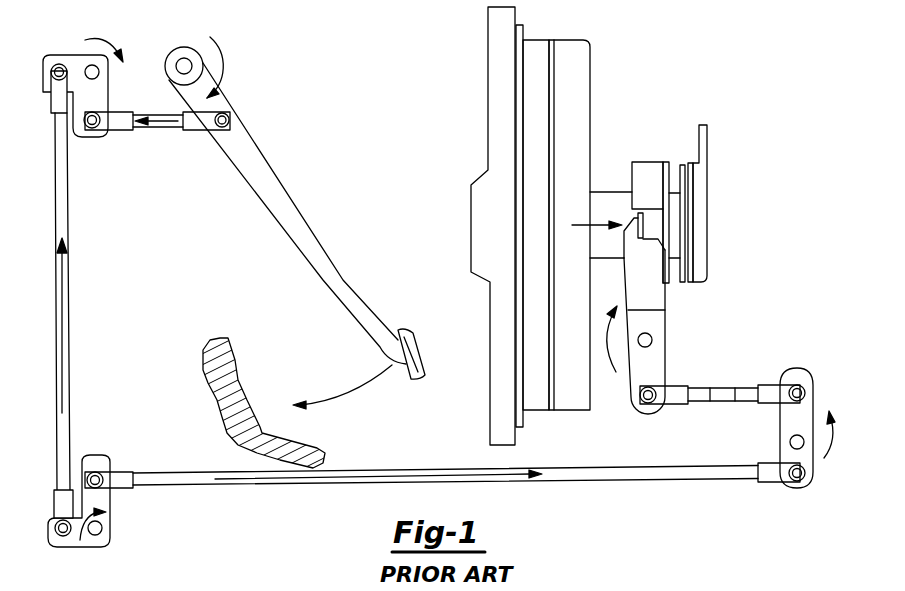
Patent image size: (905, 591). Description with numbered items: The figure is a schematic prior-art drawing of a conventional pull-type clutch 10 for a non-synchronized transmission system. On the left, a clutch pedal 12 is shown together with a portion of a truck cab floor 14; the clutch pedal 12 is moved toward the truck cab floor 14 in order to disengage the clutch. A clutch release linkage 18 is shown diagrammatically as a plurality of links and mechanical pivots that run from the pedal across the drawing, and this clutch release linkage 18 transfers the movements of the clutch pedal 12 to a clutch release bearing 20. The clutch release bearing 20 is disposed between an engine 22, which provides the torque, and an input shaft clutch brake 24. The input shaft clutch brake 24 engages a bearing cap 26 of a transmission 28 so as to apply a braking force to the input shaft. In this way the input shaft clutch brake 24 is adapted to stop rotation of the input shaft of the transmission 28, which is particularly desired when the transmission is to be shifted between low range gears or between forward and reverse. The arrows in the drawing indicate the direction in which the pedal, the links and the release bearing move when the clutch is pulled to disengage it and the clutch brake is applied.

The pull-type clutch 10 is at (593, 226).
The clutch pedal 12 is at (425, 352).
The truck cab floor 14 is at (240, 373).
The clutch release linkage 18 is at (172, 495).
The clutch release bearing 20 is at (648, 162).
The engine 22 is at (485, 202).
The input shaft clutch brake 24 is at (682, 284).
The bearing cap 26 is at (692, 183).
The transmission 28 is at (708, 165).